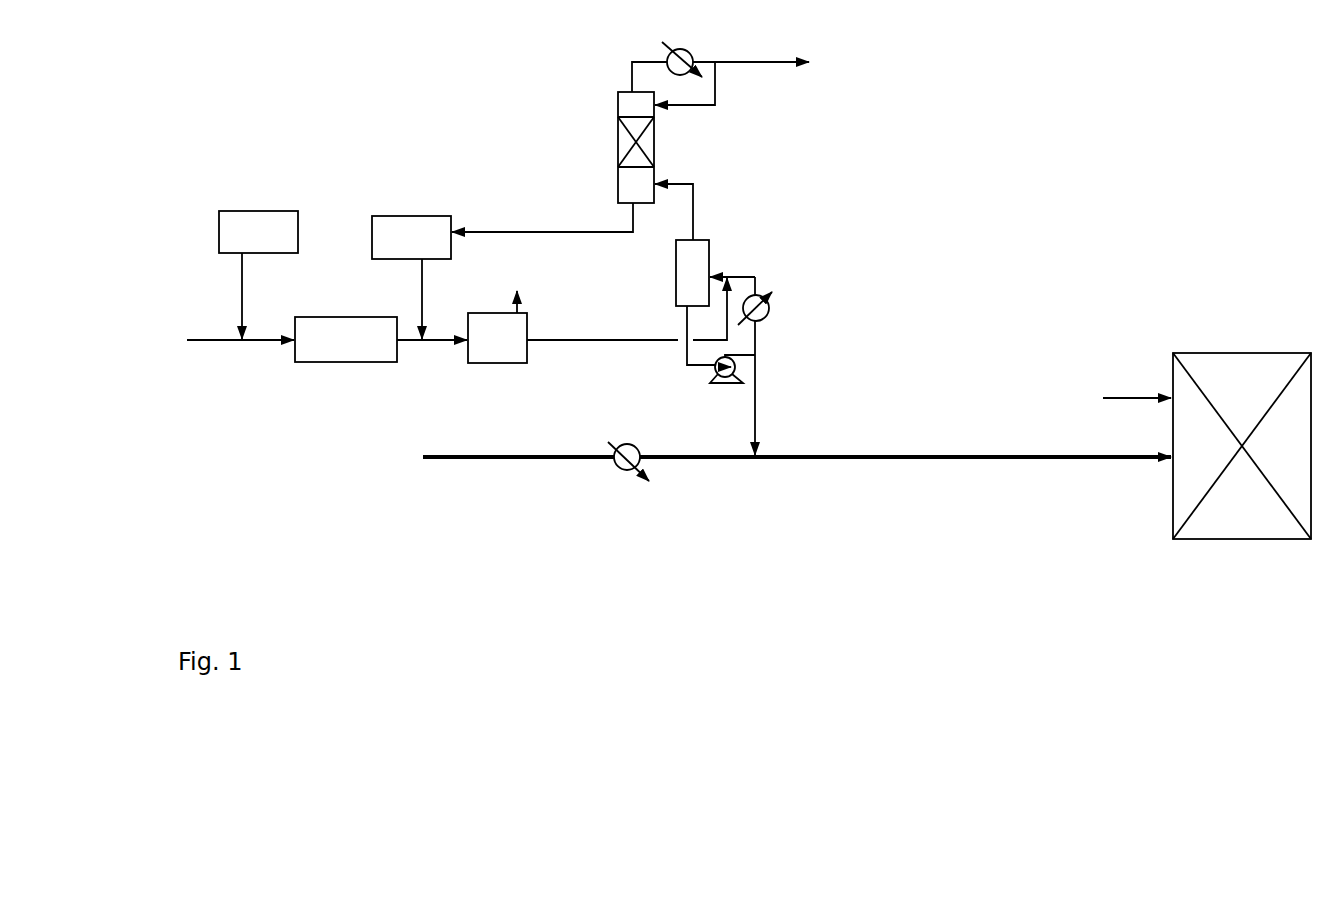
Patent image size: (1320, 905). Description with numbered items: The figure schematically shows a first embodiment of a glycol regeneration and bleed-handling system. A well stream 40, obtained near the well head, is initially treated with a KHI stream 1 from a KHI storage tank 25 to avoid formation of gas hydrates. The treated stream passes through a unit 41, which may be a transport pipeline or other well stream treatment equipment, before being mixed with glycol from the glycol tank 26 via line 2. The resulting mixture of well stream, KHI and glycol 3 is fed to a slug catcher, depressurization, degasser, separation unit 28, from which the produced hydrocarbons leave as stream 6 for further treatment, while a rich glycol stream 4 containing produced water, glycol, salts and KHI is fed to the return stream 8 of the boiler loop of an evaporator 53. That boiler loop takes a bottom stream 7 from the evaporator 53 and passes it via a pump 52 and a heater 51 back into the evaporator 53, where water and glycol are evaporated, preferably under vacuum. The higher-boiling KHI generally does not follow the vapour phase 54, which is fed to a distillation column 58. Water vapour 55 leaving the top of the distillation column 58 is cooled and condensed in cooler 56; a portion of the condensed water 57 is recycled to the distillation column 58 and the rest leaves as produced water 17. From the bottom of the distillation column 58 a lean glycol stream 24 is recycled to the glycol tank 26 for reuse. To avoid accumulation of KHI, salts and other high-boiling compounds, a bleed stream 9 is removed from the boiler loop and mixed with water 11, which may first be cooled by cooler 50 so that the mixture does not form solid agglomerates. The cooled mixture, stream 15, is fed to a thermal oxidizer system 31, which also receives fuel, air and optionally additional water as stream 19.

The KHI stream 1 is at (234, 296).
The line 2 is at (412, 299).
The mixture of the well stream, KHI and glycol 3 is at (432, 359).
The rich glycol stream 4 is at (627, 323).
The stream 6 is at (527, 298).
The bottom stream 7 is at (698, 349).
The return stream 8 is at (734, 262).
The bleed stream 9 is at (765, 388).
The water 11 is at (797, 475).
The stream 15 is at (900, 476).
The produced water 17 is at (751, 50).
The stream 19 is at (1135, 381).
The lean glycol stream 24 is at (542, 218).
The KHI storage tank 25 is at (258, 232).
The glycol tank 26 is at (411, 237).
The slug catcher, depressurization, degasser, separation unit 28 is at (497, 338).
The thermal oxidizer system 31 is at (1242, 446).
The well stream 40 is at (223, 359).
The unit 41 is at (346, 339).
The cooler 50 is at (628, 480).
The heater 51 is at (769, 306).
The pump 52 is at (731, 384).
The evaporator 53 is at (675, 273).
The vapour phase 54 is at (691, 207).
The water vapour 55 is at (639, 66).
The cooler 56 is at (682, 51).
The condensed water 57 is at (701, 94).
The distillation column 58 is at (618, 147).